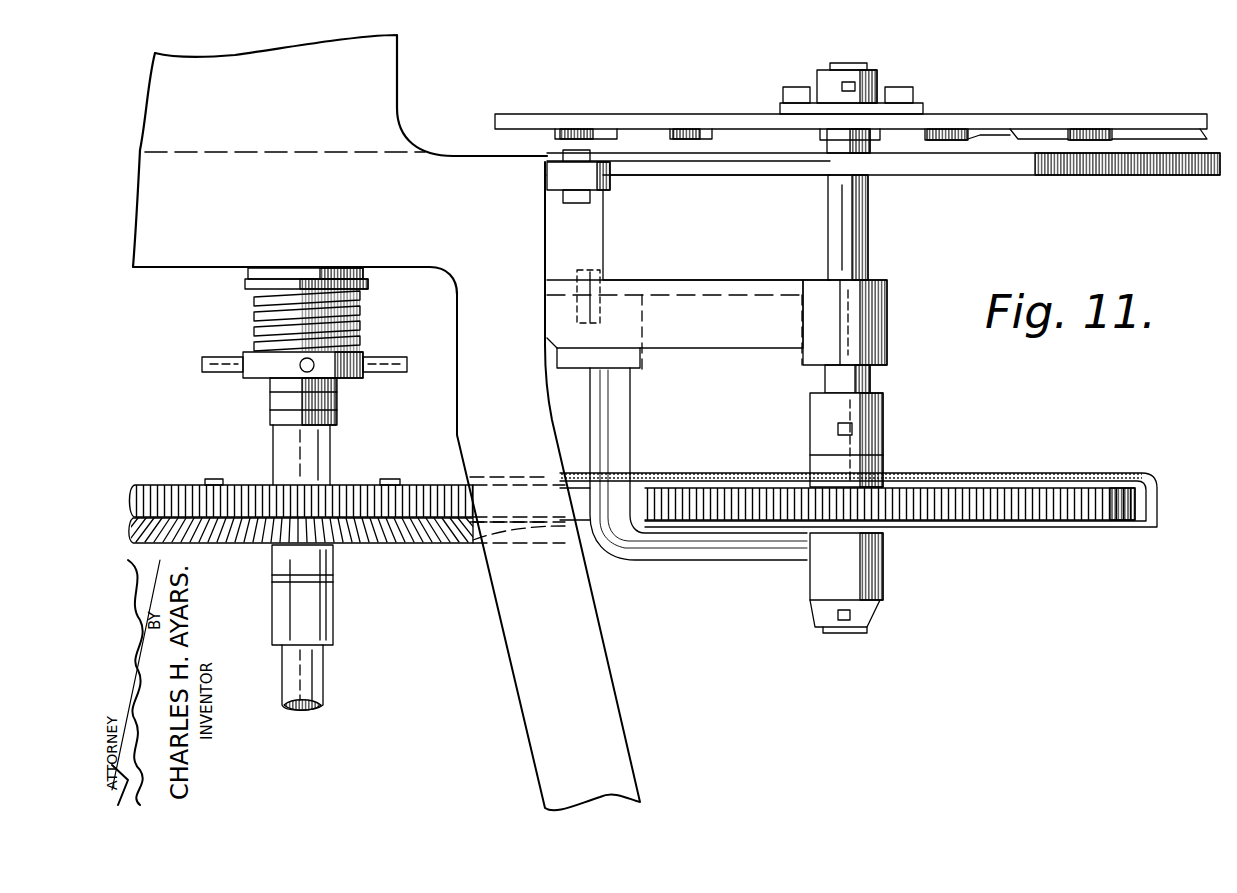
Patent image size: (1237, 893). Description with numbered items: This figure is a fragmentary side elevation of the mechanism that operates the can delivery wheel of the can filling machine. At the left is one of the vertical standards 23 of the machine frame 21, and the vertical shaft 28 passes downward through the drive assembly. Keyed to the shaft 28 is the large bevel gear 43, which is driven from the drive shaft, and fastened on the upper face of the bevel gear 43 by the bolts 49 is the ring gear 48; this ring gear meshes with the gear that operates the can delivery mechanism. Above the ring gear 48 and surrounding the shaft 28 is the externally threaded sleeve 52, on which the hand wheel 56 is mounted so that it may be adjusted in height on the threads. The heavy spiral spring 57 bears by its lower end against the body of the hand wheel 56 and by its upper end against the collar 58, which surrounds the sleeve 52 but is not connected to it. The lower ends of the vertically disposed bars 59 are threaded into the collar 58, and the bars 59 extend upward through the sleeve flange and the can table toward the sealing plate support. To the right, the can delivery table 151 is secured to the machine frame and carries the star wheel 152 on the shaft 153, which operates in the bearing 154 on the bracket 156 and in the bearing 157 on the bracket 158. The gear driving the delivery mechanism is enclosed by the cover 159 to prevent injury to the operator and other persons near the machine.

The frame 21 is at (548, 486).
The vertical standard 23 is at (340, 164).
The shaft 28 is at (324, 673).
The large bevel gear 43 is at (447, 543).
The ring gear 48 is at (440, 479).
The bolt 49 is at (399, 472).
The externally threaded sleeve 52 is at (337, 407).
The hand wheel 56 is at (387, 358).
The spiral spring 57 is at (360, 313).
The collar 58 is at (247, 285).
The vertically disposed bar 59 is at (366, 277).
The can delivery table 151 is at (971, 168).
The star wheel 152 is at (947, 116).
The shaft 153 is at (869, 220).
The bearing 154 is at (887, 318).
The bracket 156 is at (718, 281).
The bearing 157 is at (883, 431).
The bracket 158 is at (757, 561).
The cover 159 is at (1045, 474).